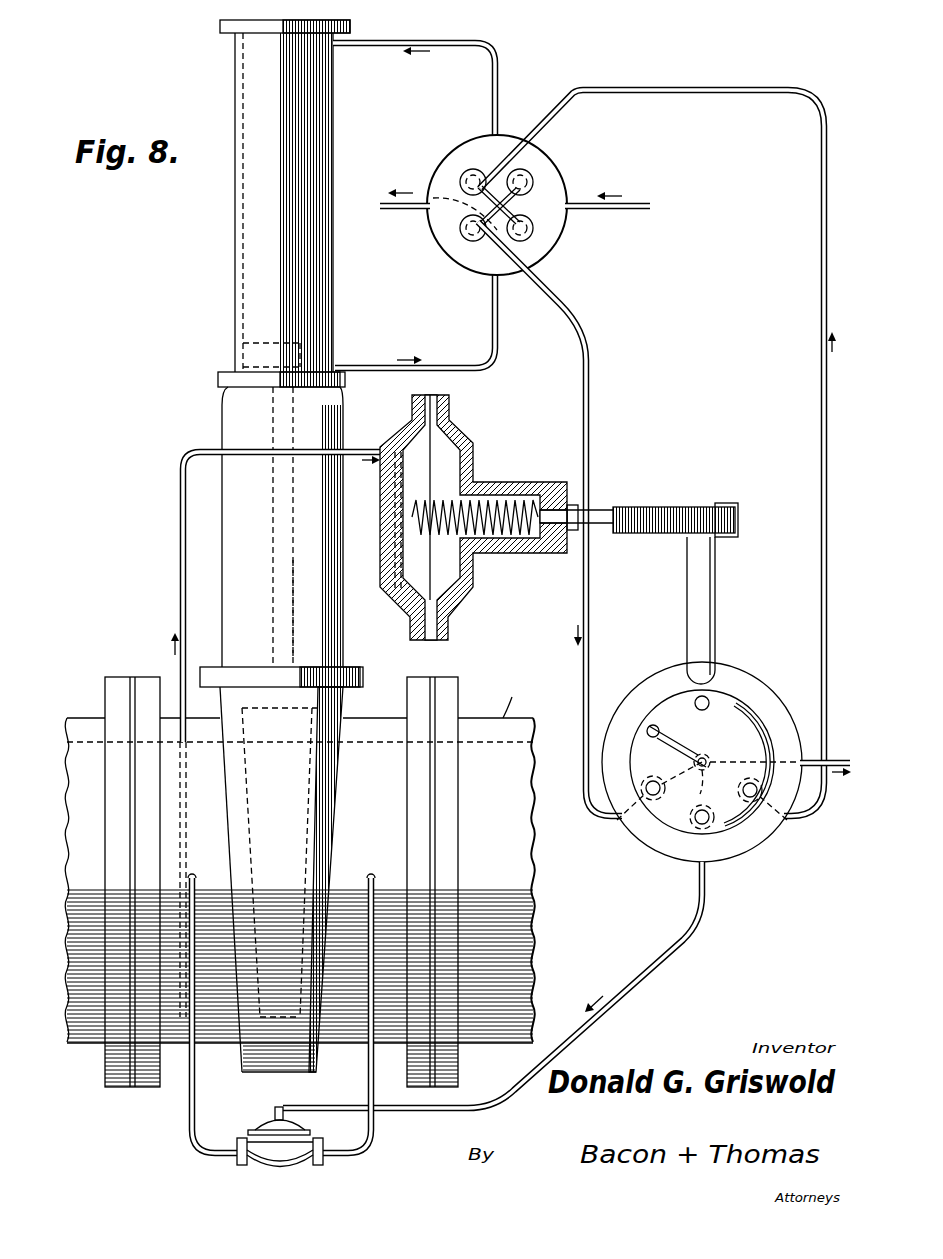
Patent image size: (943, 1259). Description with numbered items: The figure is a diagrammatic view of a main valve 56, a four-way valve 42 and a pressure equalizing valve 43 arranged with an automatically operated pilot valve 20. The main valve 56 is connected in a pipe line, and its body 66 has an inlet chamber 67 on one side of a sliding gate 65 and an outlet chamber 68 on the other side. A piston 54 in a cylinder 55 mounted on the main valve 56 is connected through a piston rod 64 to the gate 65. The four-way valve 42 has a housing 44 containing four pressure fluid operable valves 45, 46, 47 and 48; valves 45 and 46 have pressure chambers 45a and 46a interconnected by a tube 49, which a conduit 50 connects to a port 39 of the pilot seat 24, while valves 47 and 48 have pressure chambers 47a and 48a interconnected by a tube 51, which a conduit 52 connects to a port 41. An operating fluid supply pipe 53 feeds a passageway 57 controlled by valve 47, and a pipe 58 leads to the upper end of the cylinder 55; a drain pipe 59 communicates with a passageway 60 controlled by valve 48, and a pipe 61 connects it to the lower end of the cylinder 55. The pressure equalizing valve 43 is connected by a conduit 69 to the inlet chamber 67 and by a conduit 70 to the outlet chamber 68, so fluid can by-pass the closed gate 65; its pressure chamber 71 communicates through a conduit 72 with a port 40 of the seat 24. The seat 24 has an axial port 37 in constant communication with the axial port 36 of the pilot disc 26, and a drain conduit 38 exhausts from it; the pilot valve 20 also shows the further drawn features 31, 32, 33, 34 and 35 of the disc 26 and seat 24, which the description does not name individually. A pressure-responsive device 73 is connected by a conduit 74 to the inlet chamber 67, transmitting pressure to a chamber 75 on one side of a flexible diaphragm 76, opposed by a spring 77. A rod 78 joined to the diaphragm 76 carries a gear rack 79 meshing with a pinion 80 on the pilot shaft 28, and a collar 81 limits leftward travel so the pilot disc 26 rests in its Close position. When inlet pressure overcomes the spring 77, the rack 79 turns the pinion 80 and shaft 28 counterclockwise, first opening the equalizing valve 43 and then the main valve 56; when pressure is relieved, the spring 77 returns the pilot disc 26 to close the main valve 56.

The pilot valve 20 is at (748, 668).
The seat 24 is at (654, 676).
The pilot disc 26 is at (755, 718).
The pilot shaft 28 is at (716, 616).
The port 31 is at (710, 705).
The port 32 is at (763, 790).
The port 33 is at (695, 822).
The operating arm 34 is at (680, 745).
The port 35 is at (663, 792).
The axial port 36 is at (714, 784).
The axial port 37 is at (712, 755).
The drain conduit 38 is at (835, 760).
The port 39 is at (772, 811).
The port 40 is at (710, 825).
The port 41 is at (636, 810).
The four-way valve 42 is at (560, 238).
The pressure equalizing valve 43 is at (247, 1162).
The housing 44 is at (528, 272).
The valve 45 is at (476, 168).
The pressure chamber 45a is at (465, 172).
The valve 46 is at (533, 238).
The pressure chamber 46a is at (535, 225).
The valve 47 is at (535, 165).
The pressure chamber 47a is at (530, 168).
The valve 48 is at (470, 245).
The pressure chamber 48a is at (462, 240).
The tube 49 is at (462, 182).
The conduit 50 is at (820, 262).
The tube 51 is at (538, 188).
The conduit 52 is at (591, 420).
The operating fluid supply pipe 53 is at (640, 203).
The piston 54 is at (318, 345).
The cylinder 55 is at (335, 246).
The main valve 56 is at (226, 415).
The passageway 57 is at (505, 143).
The pipe 58 is at (500, 65).
The drain pipe 59 is at (410, 210).
The passageway 60 is at (440, 230).
The pipe 61 is at (450, 362).
The piston rod 64 is at (296, 610).
The gate 65 is at (308, 707).
The body 66 is at (372, 718).
The inlet chamber 67 is at (198, 745).
The outlet chamber 68 is at (378, 748).
The conduit 69 is at (188, 1108).
The conduit 70 is at (375, 1145).
The pressure chamber 71 is at (272, 1125).
The conduit 72 is at (668, 947).
The pressure-responsive device 73 is at (462, 435).
The conduit 74 is at (180, 545).
The chamber 75 is at (390, 594).
The flexible diaphragm 76 is at (428, 640).
The spring 77 is at (505, 500).
The rod 78 is at (598, 510).
The gear rack 79 is at (646, 507).
The pinion 80 is at (735, 507).
The collar 81 is at (575, 533).